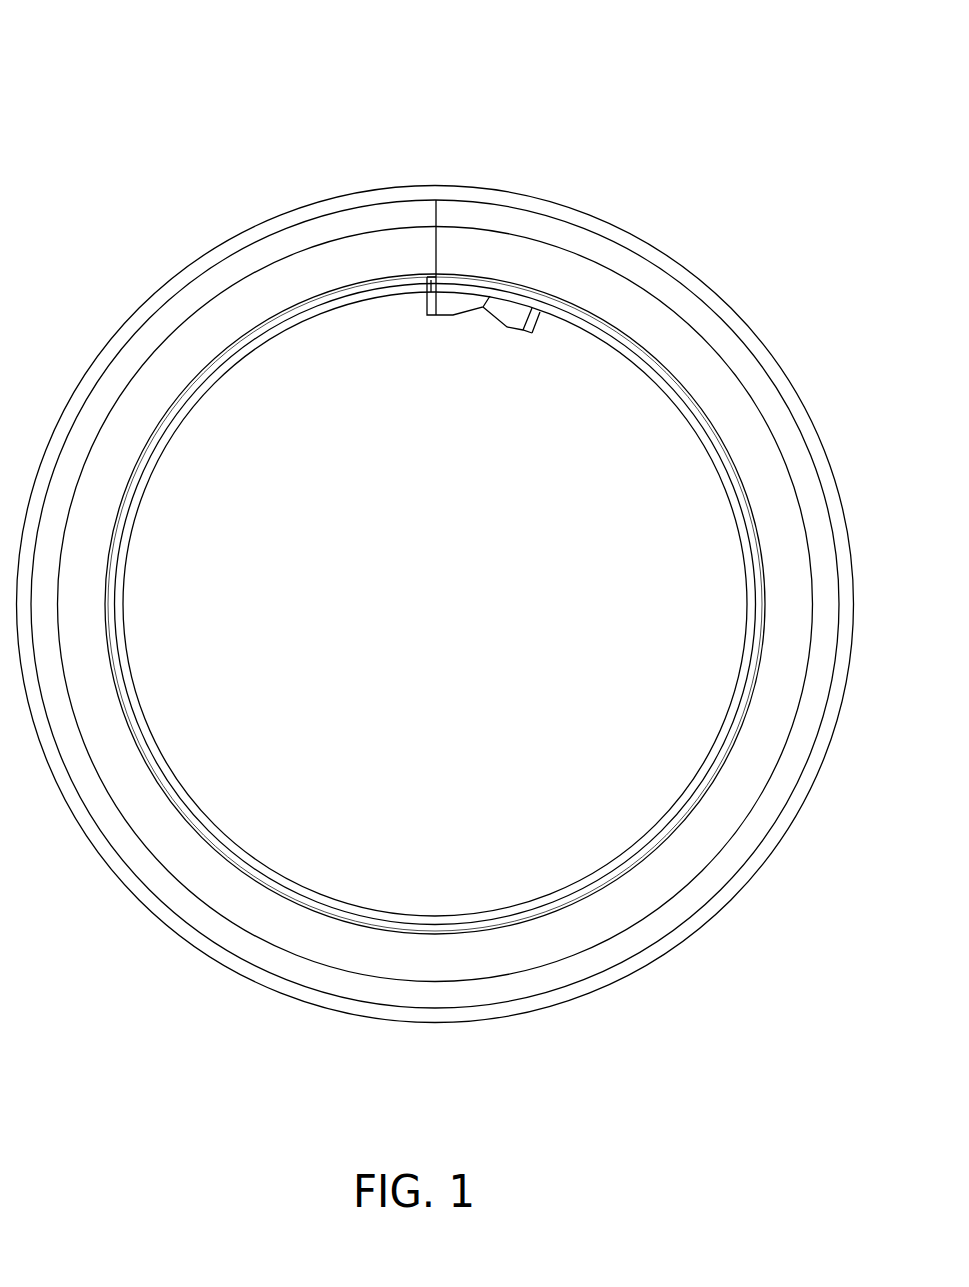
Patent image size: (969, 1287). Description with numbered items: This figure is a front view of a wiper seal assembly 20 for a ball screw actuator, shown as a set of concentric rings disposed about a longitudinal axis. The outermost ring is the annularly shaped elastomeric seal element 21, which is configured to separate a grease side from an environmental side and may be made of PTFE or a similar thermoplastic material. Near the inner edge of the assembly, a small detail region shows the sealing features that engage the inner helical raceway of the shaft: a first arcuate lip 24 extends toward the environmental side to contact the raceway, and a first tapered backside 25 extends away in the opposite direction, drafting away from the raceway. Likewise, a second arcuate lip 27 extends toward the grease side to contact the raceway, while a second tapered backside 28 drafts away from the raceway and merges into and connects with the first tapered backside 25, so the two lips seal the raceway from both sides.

The wiper seal assembly 20 is at (690, 120).
The seal element 21 is at (838, 487).
The first arcuate lip 24 is at (427, 315).
The first tapered backside 25 is at (453, 315).
The second arcuate lip 27 is at (533, 333).
The second tapered backside 28 is at (507, 327).